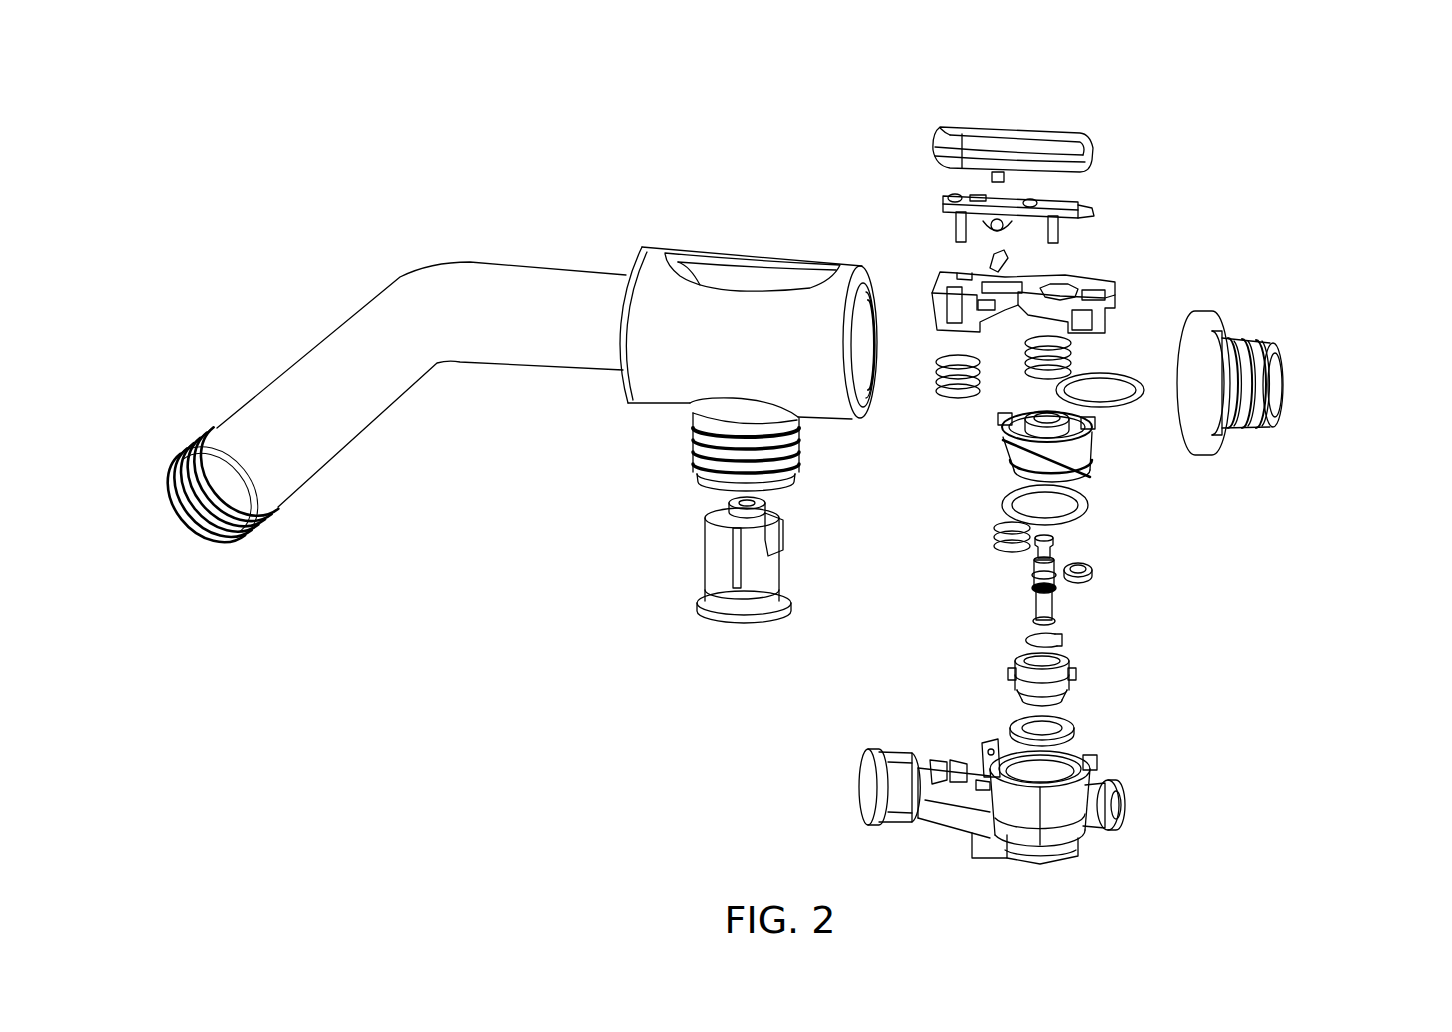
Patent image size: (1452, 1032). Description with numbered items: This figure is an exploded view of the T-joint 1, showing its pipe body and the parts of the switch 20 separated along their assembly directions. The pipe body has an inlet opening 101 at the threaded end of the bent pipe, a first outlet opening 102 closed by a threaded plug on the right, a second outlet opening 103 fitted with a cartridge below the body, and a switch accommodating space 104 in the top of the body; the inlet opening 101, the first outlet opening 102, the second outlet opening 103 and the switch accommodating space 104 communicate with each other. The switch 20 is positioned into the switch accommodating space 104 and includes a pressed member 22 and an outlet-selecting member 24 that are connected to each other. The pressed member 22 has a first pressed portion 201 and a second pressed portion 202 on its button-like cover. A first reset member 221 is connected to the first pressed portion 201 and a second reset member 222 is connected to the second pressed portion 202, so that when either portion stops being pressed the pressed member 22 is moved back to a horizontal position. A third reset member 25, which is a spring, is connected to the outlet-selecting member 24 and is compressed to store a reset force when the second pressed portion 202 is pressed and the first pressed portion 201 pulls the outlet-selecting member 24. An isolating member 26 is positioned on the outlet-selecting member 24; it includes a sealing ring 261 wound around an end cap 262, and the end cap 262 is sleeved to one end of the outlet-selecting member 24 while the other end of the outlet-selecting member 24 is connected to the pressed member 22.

The T-joint 1 is at (355, 270).
The inlet opening 101 is at (196, 528).
The first outlet opening 102 is at (1292, 385).
The second outlet opening 103 is at (728, 632).
The switch accommodating space 104 is at (752, 250).
The switch 20 is at (1013, 129).
The first pressed portion 201 is at (1055, 142).
The second pressed portion 202 is at (970, 117).
The pressed member 22 is at (1113, 205).
The first reset member 221 is at (1030, 374).
The second reset member 222 is at (945, 394).
The outlet-selecting member 24 is at (1048, 600).
The third reset member 25 is at (995, 545).
The isolating member 26 is at (1129, 701).
The sealing ring 261 is at (1075, 728).
The end cap 262 is at (1072, 670).